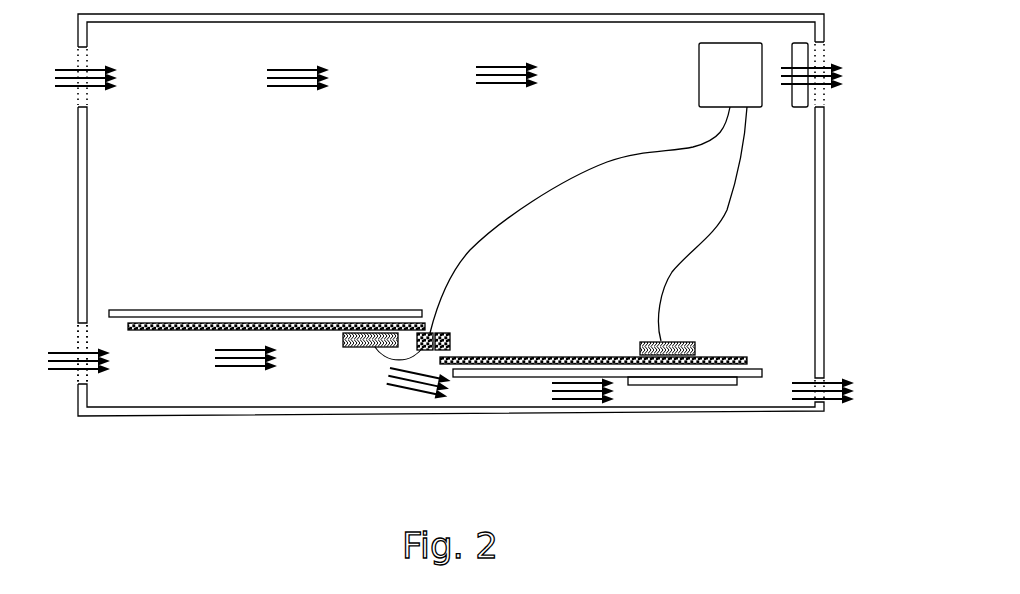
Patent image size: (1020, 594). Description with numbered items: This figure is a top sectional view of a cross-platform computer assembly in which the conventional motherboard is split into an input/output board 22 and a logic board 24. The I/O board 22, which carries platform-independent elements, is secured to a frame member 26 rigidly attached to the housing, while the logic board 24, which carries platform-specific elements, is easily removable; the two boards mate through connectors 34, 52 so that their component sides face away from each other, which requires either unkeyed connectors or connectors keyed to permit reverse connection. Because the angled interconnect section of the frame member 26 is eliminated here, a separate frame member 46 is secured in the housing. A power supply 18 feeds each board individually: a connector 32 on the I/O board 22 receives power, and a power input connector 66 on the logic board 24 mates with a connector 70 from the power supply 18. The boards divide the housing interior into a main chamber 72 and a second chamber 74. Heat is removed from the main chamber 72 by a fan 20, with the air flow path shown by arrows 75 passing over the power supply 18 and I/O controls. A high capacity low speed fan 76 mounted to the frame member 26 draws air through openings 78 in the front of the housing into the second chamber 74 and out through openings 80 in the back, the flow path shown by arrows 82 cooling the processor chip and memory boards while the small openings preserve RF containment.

The power supply 18 is at (730, 68).
The fan 20 is at (800, 52).
The input/output (I/O) board 22 is at (600, 355).
The logic board 24 is at (292, 327).
The frame member 26 is at (518, 378).
The connector 32 is at (660, 343).
The connector 34 is at (415, 337).
The separate frame member 46 is at (173, 313).
The connector 52 is at (452, 331).
The power input connector/socket 66 is at (345, 336).
The connector 70 is at (371, 350).
The first or main chamber 72 is at (198, 197).
The second chamber 74 is at (187, 394).
The arrows 75 is at (496, 75).
The high capacity low speed fan 76 is at (732, 380).
The openings 78 is at (82, 335).
The openings 80 is at (823, 400).
The arrows 82 is at (248, 362).